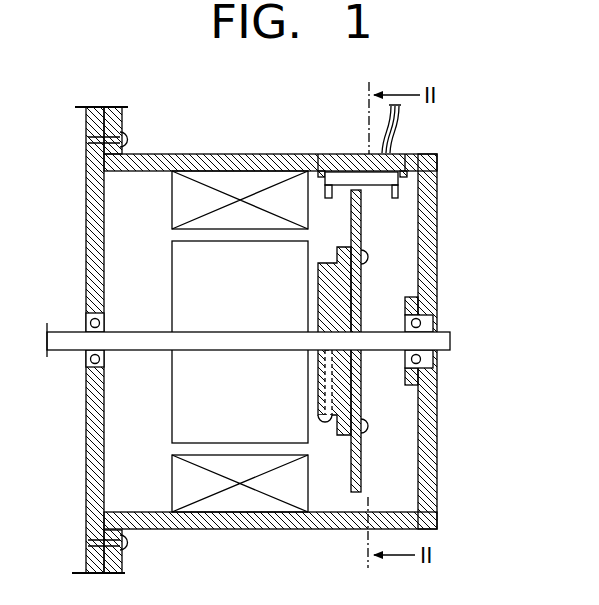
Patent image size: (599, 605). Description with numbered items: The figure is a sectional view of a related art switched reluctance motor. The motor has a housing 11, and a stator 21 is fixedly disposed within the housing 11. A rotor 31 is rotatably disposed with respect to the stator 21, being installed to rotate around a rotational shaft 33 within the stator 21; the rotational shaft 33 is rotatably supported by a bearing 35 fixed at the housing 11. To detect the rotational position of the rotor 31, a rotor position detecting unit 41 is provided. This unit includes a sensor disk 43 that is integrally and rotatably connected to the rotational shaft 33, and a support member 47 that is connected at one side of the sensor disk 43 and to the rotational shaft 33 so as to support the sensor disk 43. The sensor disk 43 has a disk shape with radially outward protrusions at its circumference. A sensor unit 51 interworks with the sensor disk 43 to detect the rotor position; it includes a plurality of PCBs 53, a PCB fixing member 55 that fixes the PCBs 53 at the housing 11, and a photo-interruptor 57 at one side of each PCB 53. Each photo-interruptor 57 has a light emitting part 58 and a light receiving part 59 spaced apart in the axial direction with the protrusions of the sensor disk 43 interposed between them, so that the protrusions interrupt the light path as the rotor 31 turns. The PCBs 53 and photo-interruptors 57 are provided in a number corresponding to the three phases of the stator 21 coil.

The housing 11 is at (194, 160).
The stator 21 is at (172, 198).
The rotor 31 is at (172, 407).
The rotational shaft 33 is at (72, 338).
The bearing 35 is at (86, 363).
The rotor position detecting unit 41 is at (369, 400).
The sensor disk 43 is at (361, 467).
The support member 47 is at (366, 425).
The sensor unit 51 is at (409, 124).
The PCB 53 is at (352, 177).
The PCB fixing member 55 is at (331, 162).
The photo-interruptor 57 is at (448, 212).
The light emitting part 58 is at (328, 195).
The light receiving part 59 is at (398, 190).